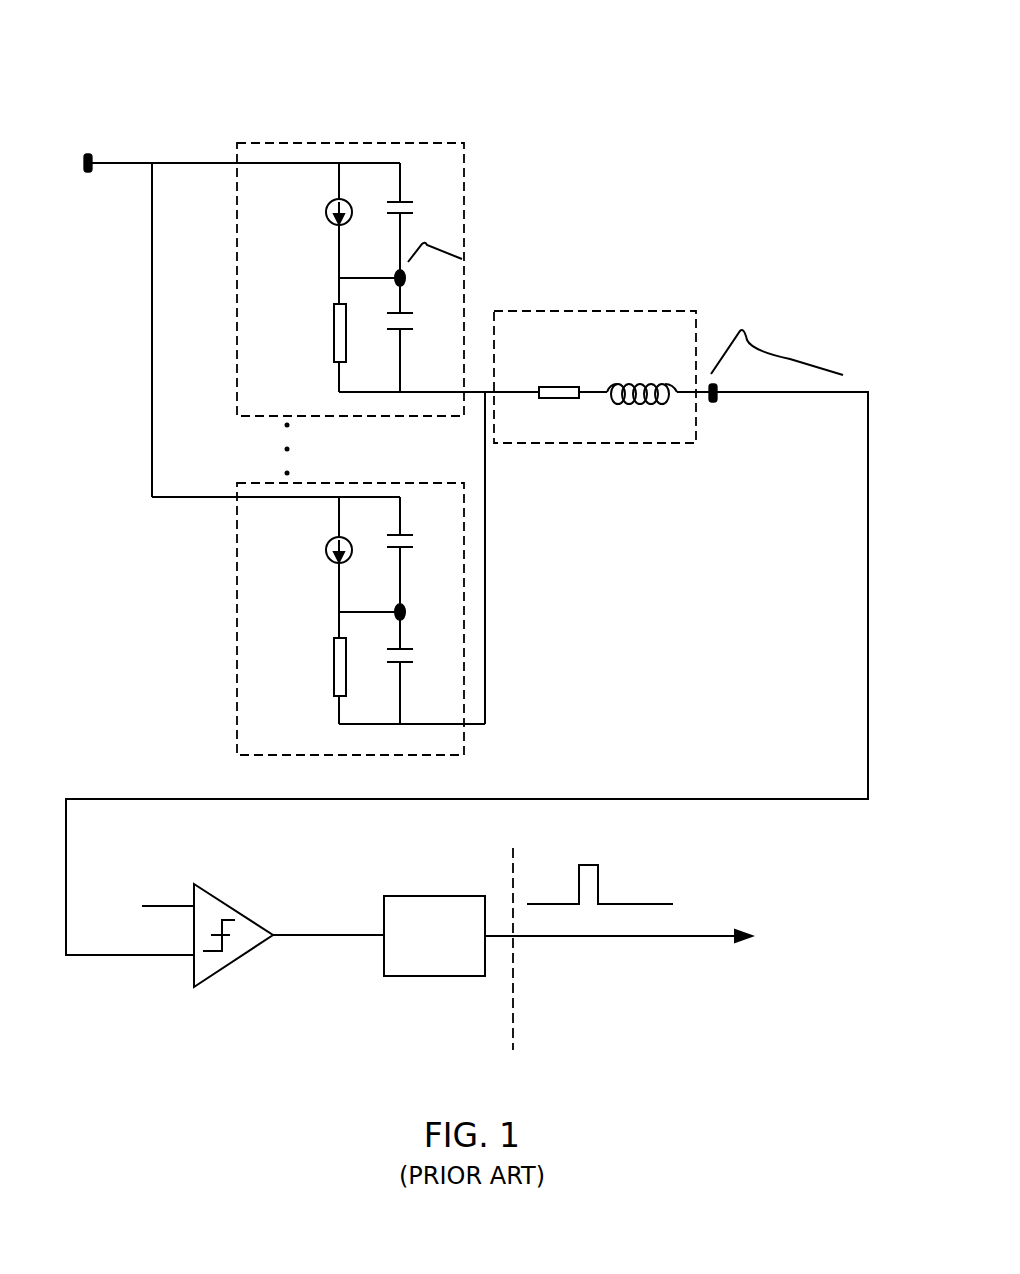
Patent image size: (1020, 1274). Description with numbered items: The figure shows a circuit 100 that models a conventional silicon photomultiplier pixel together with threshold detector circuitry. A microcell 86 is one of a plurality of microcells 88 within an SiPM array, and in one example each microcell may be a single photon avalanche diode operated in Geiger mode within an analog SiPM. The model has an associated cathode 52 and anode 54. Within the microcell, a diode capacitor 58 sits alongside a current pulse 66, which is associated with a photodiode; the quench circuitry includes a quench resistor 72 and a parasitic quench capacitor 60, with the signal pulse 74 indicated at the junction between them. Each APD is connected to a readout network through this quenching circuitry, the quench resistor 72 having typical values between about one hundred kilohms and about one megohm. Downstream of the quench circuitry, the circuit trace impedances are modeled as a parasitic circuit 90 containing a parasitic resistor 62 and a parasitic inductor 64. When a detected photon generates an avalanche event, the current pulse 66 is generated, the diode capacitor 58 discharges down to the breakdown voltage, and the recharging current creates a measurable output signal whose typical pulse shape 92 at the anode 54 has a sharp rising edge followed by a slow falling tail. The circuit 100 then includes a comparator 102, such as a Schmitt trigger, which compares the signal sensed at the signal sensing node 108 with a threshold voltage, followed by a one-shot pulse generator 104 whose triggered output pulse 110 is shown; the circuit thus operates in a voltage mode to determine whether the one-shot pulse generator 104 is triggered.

The circuit 100 is at (170, 60).
The cathode 52 is at (84, 163).
The anode 54 is at (713, 403).
The diode capacitor 58 is at (406, 209).
The parasitic quench capacitor 60 is at (406, 322).
The parasitic resistor 62 is at (559, 400).
The parasitic inductor 64 is at (665, 405).
The current pulse 66 is at (326, 212).
The quench resistor 72 is at (334, 333).
The signal pulse 74 is at (440, 248).
The microcell 86 is at (464, 173).
The plurality of microcells 88 is at (464, 743).
The parasitic circuit 90 is at (657, 311).
The pulse shape 92 is at (788, 354).
The comparator 102 is at (234, 905).
The one-shot pulse generator 104 is at (430, 895).
The signal sensing node 108 is at (143, 960).
The output pulse 110 is at (587, 862).